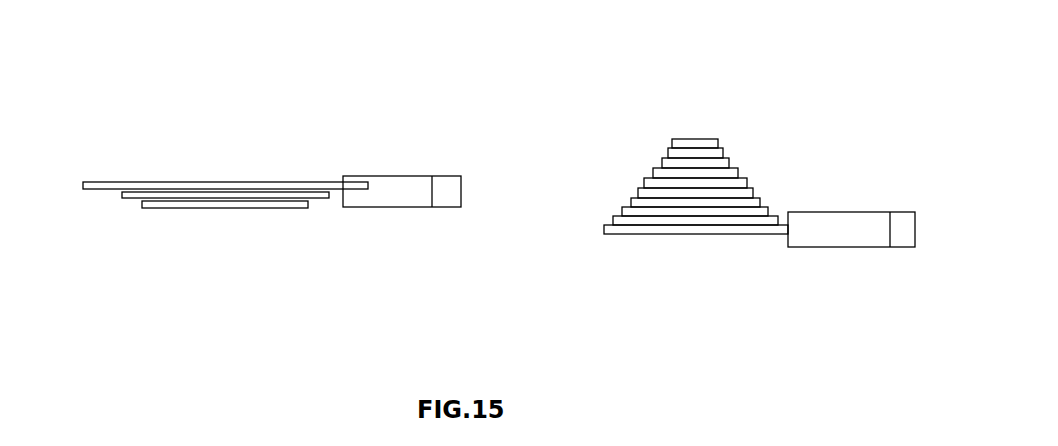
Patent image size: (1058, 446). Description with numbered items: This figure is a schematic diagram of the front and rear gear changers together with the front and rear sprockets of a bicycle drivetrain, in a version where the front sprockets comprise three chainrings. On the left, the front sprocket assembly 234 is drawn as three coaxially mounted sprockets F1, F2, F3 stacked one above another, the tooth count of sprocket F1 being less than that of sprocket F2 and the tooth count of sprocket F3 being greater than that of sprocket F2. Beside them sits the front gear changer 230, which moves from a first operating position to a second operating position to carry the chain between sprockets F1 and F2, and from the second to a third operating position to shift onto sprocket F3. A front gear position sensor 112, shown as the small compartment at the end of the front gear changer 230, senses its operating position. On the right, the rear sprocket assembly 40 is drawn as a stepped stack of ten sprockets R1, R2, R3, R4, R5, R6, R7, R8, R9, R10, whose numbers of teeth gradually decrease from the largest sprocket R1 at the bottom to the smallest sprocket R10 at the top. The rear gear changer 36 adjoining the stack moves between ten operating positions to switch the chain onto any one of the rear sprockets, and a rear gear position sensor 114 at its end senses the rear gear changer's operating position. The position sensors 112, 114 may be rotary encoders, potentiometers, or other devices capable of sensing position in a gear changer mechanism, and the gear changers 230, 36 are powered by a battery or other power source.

The front sprocket assembly 234 is at (233, 176).
The front sprocket F3 is at (218, 182).
The front sprocket F2 is at (128, 199).
The front sprocket F1 is at (207, 209).
The front gear changer 230 is at (399, 176).
The front gear position sensor 112 is at (444, 207).
The rear sprocket assembly 40 is at (687, 110).
The rear sprocket R1 is at (604, 229).
The rear sprocket R2 is at (613, 220).
The rear sprocket R3 is at (622, 211).
The rear sprocket R4 is at (631, 202).
The rear sprocket R5 is at (638, 193).
The rear sprocket R6 is at (747, 183).
The rear sprocket R7 is at (739, 173).
The rear sprocket R8 is at (730, 163).
The rear sprocket R9 is at (724, 153).
The rear sprocket R10 is at (719, 143).
The rear gear changer 36 is at (858, 220).
The rear gear position sensor 114 is at (904, 243).